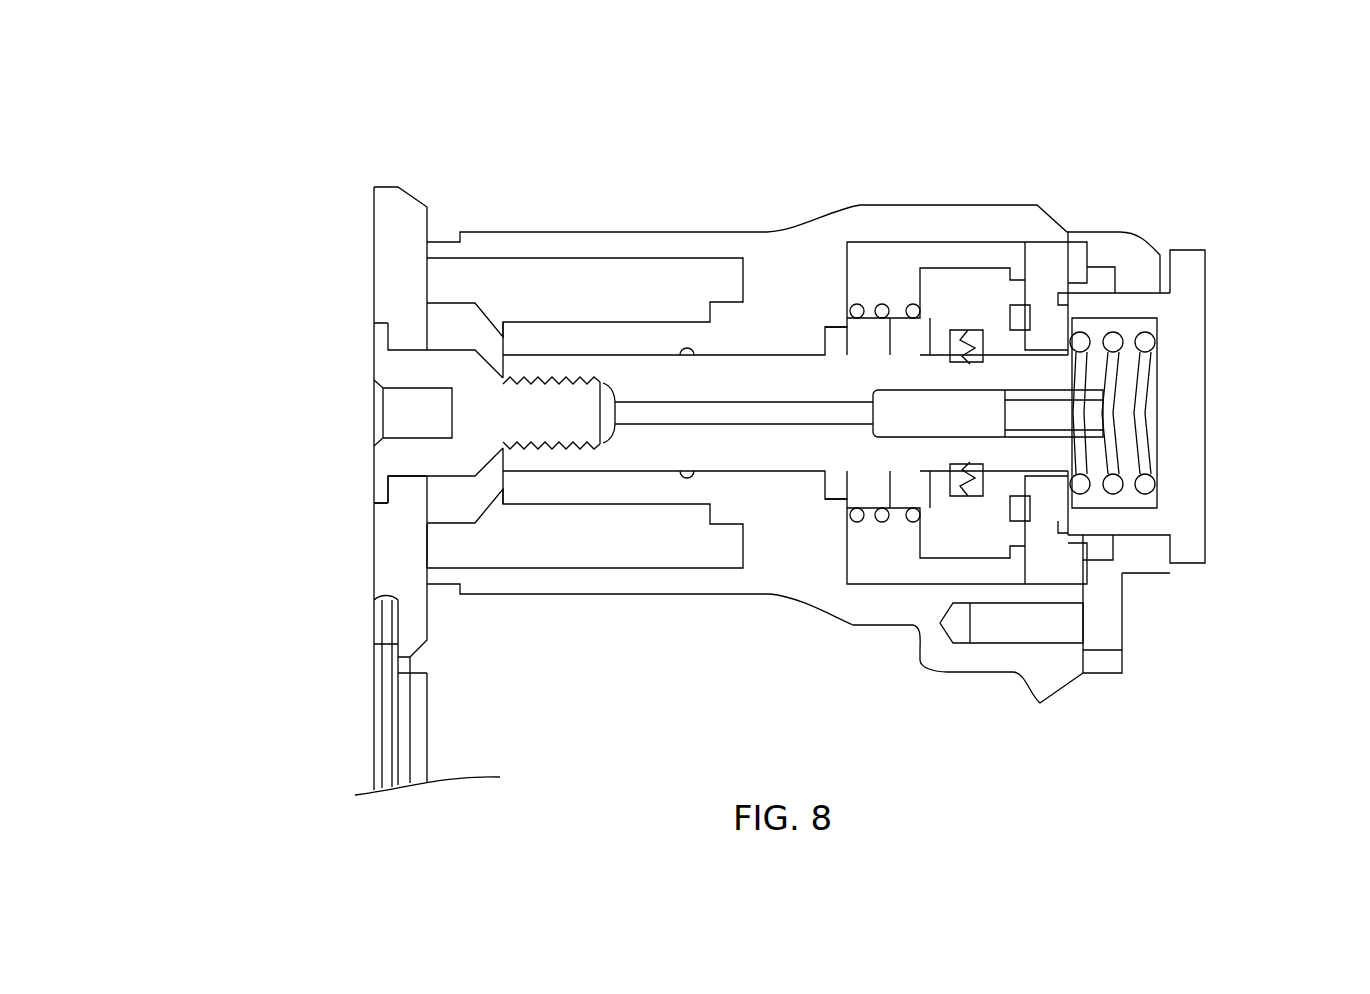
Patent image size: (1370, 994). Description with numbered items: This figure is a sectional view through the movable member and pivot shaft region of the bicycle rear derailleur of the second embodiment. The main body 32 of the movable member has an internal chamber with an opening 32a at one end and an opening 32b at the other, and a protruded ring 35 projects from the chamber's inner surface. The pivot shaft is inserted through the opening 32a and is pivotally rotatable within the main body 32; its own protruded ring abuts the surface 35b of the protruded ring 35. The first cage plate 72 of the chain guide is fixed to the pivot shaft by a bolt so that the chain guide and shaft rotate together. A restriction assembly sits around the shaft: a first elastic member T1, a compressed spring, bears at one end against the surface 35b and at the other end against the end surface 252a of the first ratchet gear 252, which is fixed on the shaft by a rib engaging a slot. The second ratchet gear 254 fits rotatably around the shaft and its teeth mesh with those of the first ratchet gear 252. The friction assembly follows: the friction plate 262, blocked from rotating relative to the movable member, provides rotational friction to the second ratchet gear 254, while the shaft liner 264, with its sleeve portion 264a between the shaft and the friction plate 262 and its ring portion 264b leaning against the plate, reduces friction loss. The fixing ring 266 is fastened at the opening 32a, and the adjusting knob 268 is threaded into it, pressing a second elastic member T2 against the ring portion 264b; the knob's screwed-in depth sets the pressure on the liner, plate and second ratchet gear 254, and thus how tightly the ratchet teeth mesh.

The first cage plate 72 is at (372, 230).
The main body 32 is at (561, 232).
The opening 32a is at (1085, 244).
The opening 32b is at (436, 282).
The protruded ring 35 is at (780, 282).
The another surface 35b is at (853, 282).
The first ratchet gear 252 is at (950, 292).
The end surface 252a is at (900, 300).
The second ratchet gear 254 is at (993, 282).
The friction plate 262 is at (1020, 480).
The shaft liner 264 is at (1199, 576).
The sleeve portion 264a is at (1040, 480).
The ring portion 264b is at (1122, 590).
The fixing ring 266 is at (1140, 253).
The adjusting knob 268 is at (1207, 310).
The first elastic member T1 is at (880, 530).
The second elastic member T2 is at (1148, 445).